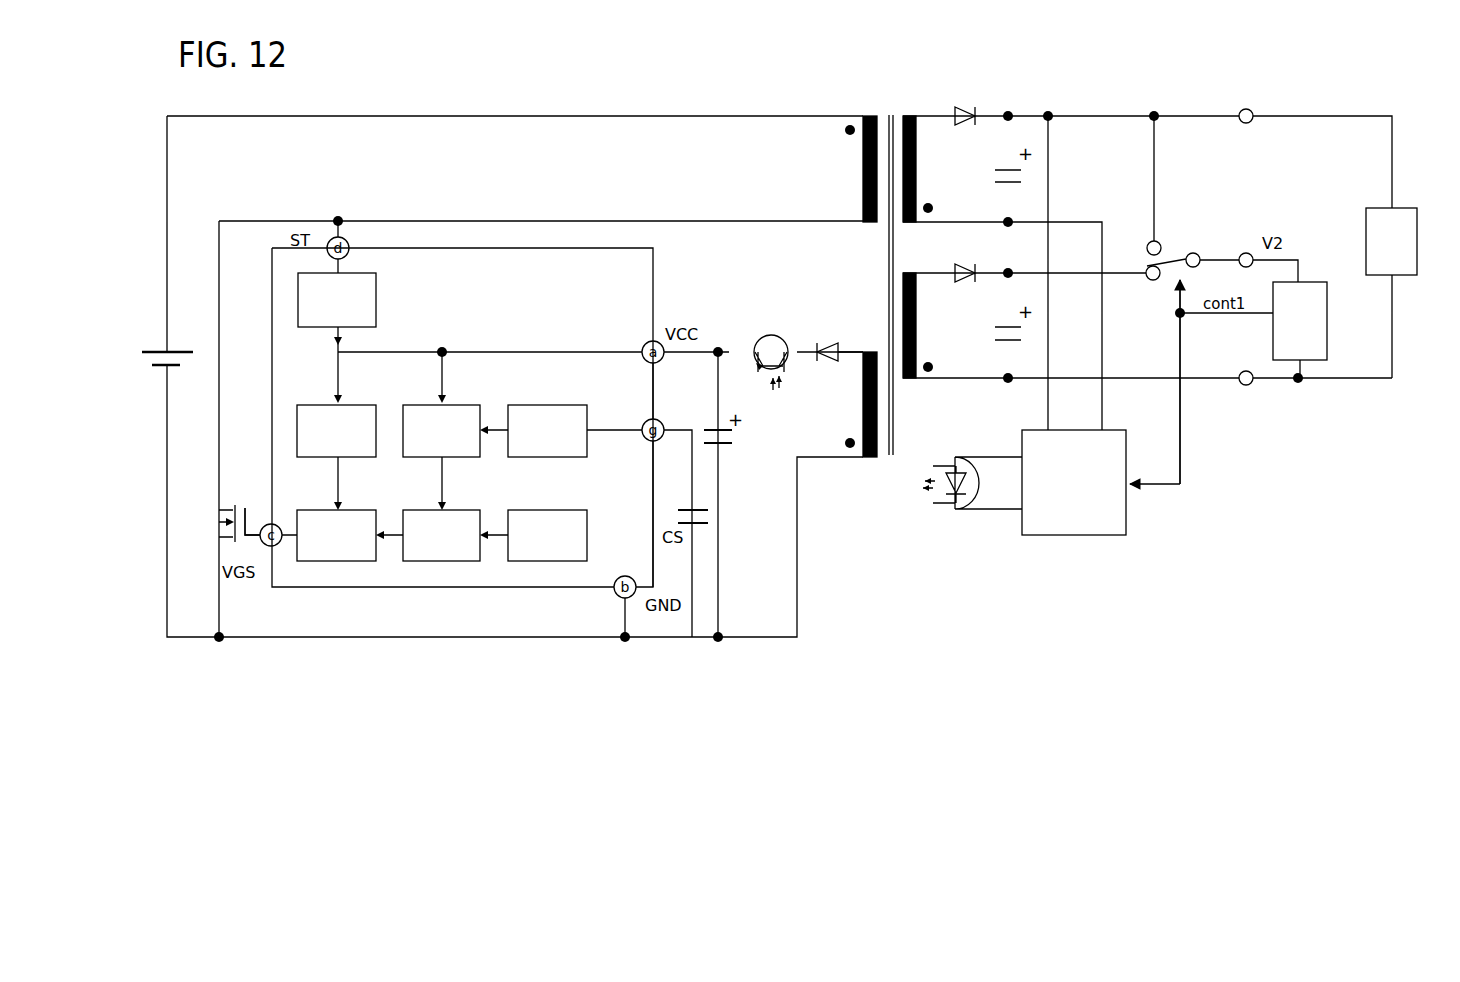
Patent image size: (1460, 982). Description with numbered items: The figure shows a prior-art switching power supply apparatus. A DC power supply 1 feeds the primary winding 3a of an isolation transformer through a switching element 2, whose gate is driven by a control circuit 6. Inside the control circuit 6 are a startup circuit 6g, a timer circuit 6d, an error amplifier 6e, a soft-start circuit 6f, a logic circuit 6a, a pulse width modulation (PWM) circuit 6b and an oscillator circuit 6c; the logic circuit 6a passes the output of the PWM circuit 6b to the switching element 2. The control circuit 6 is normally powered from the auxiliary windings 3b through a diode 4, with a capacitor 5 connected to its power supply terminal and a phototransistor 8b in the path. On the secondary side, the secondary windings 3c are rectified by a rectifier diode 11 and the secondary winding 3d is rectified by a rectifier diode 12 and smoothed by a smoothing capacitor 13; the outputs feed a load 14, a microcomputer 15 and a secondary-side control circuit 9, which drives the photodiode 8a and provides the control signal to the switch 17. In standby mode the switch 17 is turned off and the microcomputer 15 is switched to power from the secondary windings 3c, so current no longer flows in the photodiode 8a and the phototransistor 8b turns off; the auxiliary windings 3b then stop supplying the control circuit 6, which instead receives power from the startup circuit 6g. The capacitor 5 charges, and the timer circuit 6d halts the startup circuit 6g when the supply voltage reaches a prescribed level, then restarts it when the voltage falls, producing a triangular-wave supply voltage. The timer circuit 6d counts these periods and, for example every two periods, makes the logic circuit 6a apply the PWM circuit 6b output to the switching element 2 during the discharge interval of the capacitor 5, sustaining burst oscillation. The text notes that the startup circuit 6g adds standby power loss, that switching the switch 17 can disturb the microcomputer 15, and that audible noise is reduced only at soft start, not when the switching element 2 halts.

The DC power supply 1 is at (153, 338).
The switching element 2 is at (205, 498).
The primary winding 3a is at (850, 182).
The auxiliary windings 3b is at (848, 420).
The secondary windings 3c is at (928, 170).
The secondary winding 3d is at (928, 340).
The diode 4 is at (835, 328).
The capacitor 5 is at (742, 445).
The control circuit 6 is at (480, 258).
The logic circuit 6a is at (335, 575).
The pulse width modulation (PWM) circuit 6b is at (428, 575).
The oscillator circuit 6c is at (535, 573).
The timer circuit 6d is at (318, 392).
The error amplifier 6e is at (425, 392).
The soft-start circuit 6f is at (573, 392).
The startup circuit 6g is at (390, 290).
The photodiode 8a is at (955, 520).
The phototransistor 8b is at (770, 330).
The secondary-side control circuit 9 is at (1075, 548).
The rectifier diode 11 is at (990, 167).
The rectifier diode 12 is at (955, 265).
The smoothing capacitor 13 is at (990, 325).
The load 14 is at (1405, 290).
The microcomputer 15 is at (1340, 320).
The switch 17 is at (1168, 248).